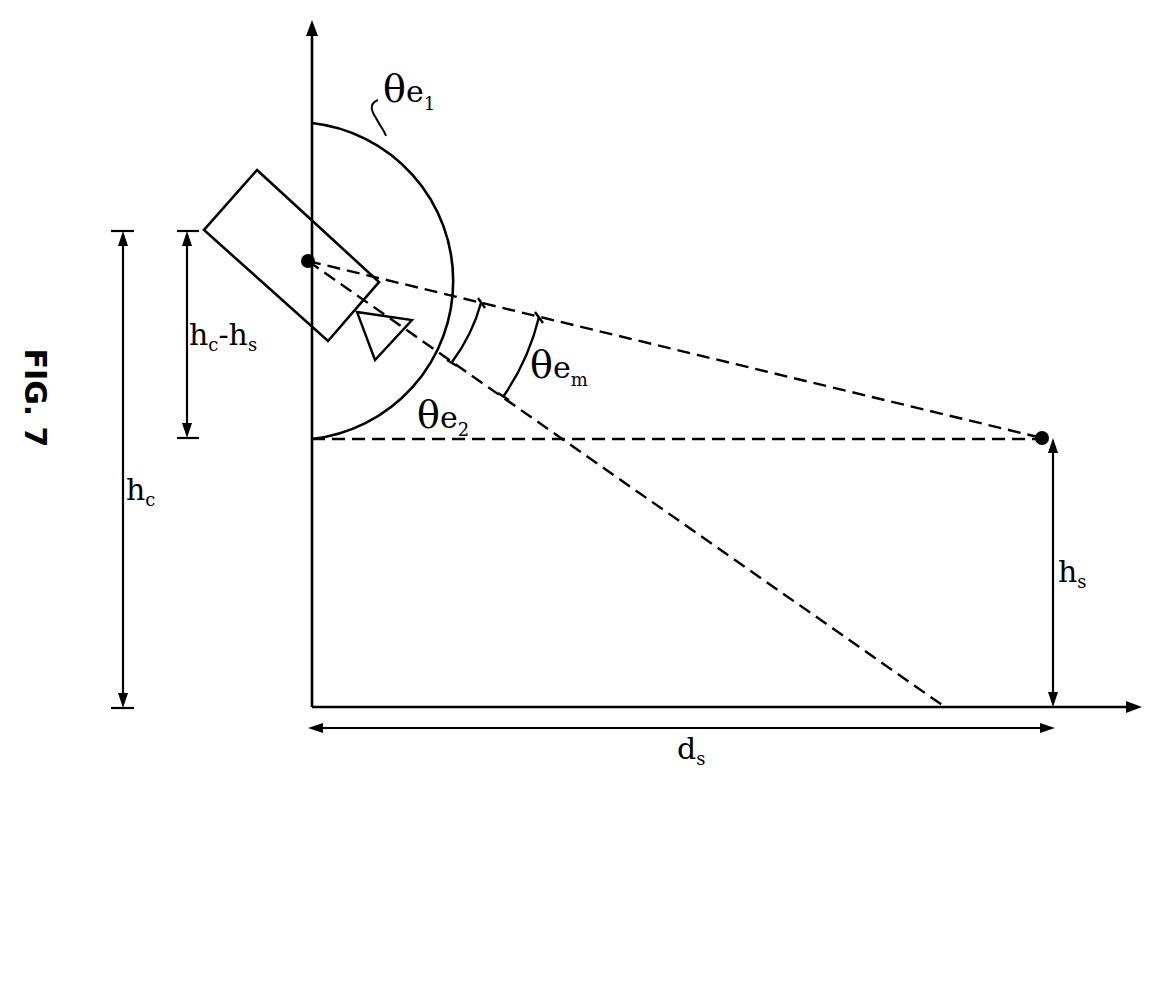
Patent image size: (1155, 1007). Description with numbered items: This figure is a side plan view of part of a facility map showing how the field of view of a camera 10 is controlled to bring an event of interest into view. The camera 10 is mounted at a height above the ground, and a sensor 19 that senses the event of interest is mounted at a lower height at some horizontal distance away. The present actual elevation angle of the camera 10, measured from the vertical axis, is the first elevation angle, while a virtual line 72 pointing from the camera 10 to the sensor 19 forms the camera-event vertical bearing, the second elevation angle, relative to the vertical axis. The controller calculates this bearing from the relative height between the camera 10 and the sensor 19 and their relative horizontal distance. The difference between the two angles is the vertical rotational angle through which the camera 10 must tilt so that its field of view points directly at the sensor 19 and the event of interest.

The camera 10 is at (232, 199).
The sensor 19 is at (1045, 432).
The virtual line 72 is at (709, 357).